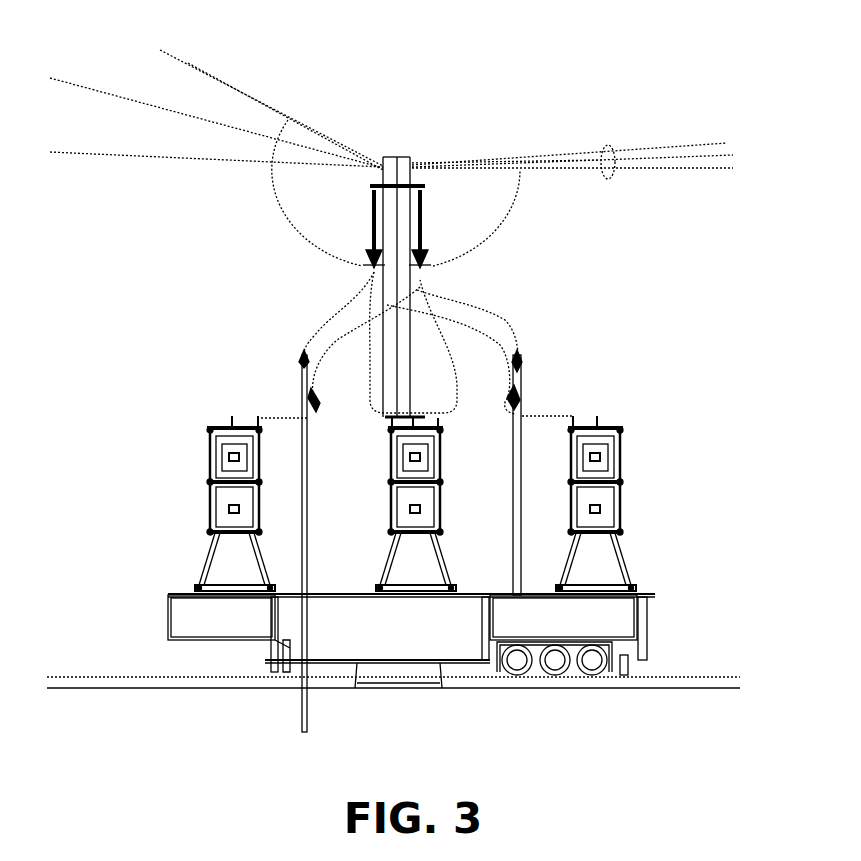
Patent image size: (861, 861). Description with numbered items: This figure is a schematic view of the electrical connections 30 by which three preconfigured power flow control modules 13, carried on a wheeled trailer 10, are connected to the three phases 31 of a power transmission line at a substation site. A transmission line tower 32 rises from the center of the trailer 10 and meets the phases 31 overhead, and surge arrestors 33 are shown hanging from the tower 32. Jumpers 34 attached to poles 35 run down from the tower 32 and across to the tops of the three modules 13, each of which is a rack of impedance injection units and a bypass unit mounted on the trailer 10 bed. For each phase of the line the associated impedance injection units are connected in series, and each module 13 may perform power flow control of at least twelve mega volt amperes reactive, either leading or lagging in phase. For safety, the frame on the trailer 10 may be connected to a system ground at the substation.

The trailer 10 is at (662, 601).
The preconfigured power flow control module 13 is at (273, 449).
The electrical connections 30 is at (518, 79).
The phases of a power transmission line 31 is at (611, 146).
The transmission line tower 32 is at (406, 156).
The surge arrestors 33 is at (425, 230).
The jumpers 34 is at (485, 307).
The poles 35 is at (513, 511).